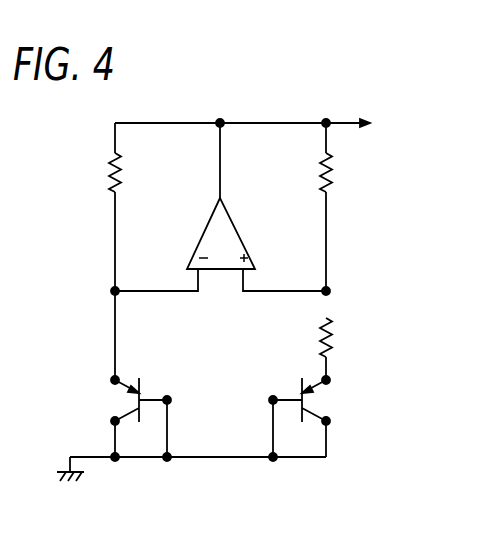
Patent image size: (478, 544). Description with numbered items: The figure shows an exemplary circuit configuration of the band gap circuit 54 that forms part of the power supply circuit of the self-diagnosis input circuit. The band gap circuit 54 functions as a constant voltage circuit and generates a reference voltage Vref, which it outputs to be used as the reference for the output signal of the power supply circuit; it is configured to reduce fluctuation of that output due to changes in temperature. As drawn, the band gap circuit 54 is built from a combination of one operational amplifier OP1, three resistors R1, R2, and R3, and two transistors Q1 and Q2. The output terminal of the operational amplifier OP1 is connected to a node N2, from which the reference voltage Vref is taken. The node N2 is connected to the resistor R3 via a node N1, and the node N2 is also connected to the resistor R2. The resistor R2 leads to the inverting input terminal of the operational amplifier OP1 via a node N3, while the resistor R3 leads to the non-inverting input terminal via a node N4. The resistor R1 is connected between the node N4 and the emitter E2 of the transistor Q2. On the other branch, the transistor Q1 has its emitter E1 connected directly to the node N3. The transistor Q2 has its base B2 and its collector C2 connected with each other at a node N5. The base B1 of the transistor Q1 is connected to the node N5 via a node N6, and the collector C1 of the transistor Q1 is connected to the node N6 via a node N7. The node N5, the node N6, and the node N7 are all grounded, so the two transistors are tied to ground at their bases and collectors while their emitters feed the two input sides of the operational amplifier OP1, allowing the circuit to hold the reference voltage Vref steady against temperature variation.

The band gap circuit 54 is at (382, 85).
The reference voltage Vref is at (409, 125).
The node N1 is at (325, 109).
The node N2 is at (219, 109).
The node N3 is at (98, 294).
The node N4 is at (344, 293).
The node N5 is at (272, 475).
The node N6 is at (166, 475).
The node N7 is at (116, 475).
The resistor R1 is at (341, 337).
The resistor R2 is at (99, 172).
The resistor R3 is at (342, 172).
The operational amplifier OP1 is at (230, 231).
The transistor Q1 is at (122, 417).
The transistor Q2 is at (318, 417).
The emitter of transistor Q1 E1 is at (129, 367).
The emitter of transistor Q2 E2 is at (311, 368).
The base of transistor Q1 B1 is at (183, 402).
The base of transistor Q2 B2 is at (256, 402).
The collector of transistor Q1 C1 is at (129, 436).
The collector of transistor Q2 C2 is at (311, 436).